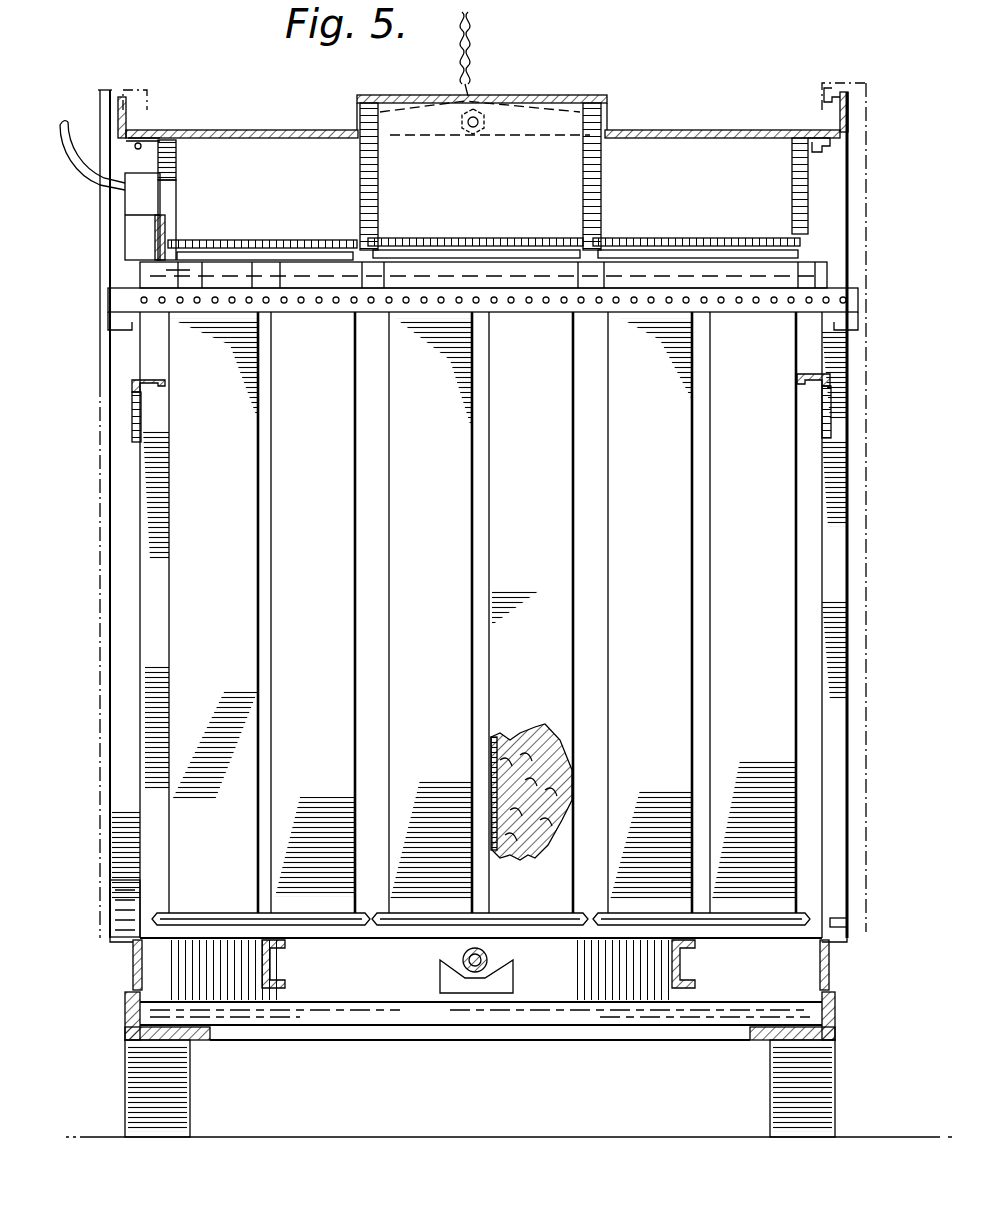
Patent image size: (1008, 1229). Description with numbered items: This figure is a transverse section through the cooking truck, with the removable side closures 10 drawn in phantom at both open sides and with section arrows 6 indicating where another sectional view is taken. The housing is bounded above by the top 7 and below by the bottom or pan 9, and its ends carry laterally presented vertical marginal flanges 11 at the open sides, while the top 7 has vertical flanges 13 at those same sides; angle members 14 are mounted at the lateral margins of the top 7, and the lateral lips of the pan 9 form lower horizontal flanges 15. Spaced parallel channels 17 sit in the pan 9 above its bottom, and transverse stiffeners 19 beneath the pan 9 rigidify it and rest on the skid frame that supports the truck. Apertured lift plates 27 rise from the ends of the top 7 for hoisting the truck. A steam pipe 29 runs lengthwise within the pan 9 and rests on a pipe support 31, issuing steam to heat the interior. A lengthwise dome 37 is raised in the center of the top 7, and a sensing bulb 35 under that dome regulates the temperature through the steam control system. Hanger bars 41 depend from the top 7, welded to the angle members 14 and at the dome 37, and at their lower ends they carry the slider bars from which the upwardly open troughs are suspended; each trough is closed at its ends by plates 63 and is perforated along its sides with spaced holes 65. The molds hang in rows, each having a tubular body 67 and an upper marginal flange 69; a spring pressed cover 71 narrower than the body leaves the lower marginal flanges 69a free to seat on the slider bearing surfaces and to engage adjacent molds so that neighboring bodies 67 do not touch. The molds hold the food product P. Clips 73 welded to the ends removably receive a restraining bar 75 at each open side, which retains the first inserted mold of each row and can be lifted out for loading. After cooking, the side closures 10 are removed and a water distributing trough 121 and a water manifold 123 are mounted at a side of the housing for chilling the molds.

The section line 6 is at (150, 62).
The top 7 is at (298, 130).
The bottom or pan 9 is at (580, 1014).
The side closure 10 is at (868, 524).
The vertical marginal flange 11 is at (676, 106).
The vertical flange 13 is at (126, 120).
The angle member 14 is at (160, 140).
The lower horizontal flange 15 is at (122, 948).
The channel 17 is at (286, 962).
The stiffener 19 is at (250, 1014).
The lift plate 27 is at (566, 70).
The steam pipe 29 is at (486, 962).
The pipe support 31 is at (438, 978).
The sensing bulb 35 is at (470, 136).
The dome 37 is at (416, 76).
The hanger bar 41 is at (177, 162).
The plate 63 is at (483, 314).
The hole 65 is at (328, 306).
The tubular body 67 is at (479, 612).
The upper marginal flange 69 is at (312, 254).
The lower marginal flange 69a is at (362, 926).
The spring pressed cover 71 is at (224, 240).
The clip 73 is at (134, 432).
The restraining bar 75 is at (134, 382).
The water distributing trough 121 is at (125, 226).
The water chamber or manifold 123 is at (150, 190).
The food product P is at (522, 736).